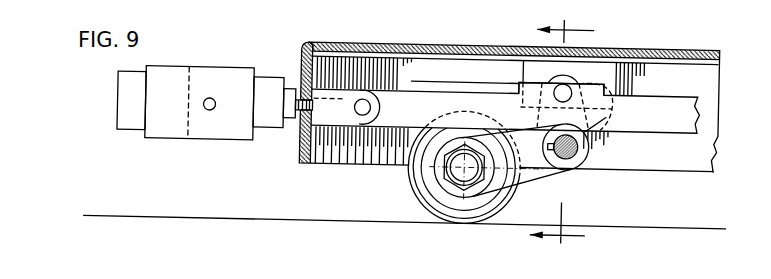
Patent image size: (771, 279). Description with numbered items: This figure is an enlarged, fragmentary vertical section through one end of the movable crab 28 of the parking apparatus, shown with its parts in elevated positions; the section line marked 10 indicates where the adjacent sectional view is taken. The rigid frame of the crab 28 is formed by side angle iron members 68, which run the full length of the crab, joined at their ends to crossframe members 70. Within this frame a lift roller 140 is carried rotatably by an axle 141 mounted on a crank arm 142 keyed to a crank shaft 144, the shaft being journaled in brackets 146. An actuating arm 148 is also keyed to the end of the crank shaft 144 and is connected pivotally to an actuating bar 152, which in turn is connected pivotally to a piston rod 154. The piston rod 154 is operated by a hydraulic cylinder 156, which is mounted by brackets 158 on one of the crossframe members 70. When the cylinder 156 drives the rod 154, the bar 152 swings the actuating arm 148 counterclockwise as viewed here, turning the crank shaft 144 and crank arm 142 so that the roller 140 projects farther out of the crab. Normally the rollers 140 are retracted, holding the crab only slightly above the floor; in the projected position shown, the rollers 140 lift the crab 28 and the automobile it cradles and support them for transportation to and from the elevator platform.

The section line 10- 10 is at (561, 132).
The movable crab 28 is at (628, 38).
The side angle iron member 68 is at (382, 161).
The crossframe member 70 is at (312, 165).
The lift roller 140 is at (462, 216).
The axle 141 is at (456, 170).
The crank arm 142 is at (537, 175).
The crank shaft 144 is at (572, 156).
The bracket 146 is at (586, 122).
The actuating arm 148 is at (617, 67).
The actuating bar 152 is at (405, 95).
The piston rod 154 is at (297, 100).
The hydraulic cylinder 156 is at (215, 71).
The bracket 158 is at (276, 131).